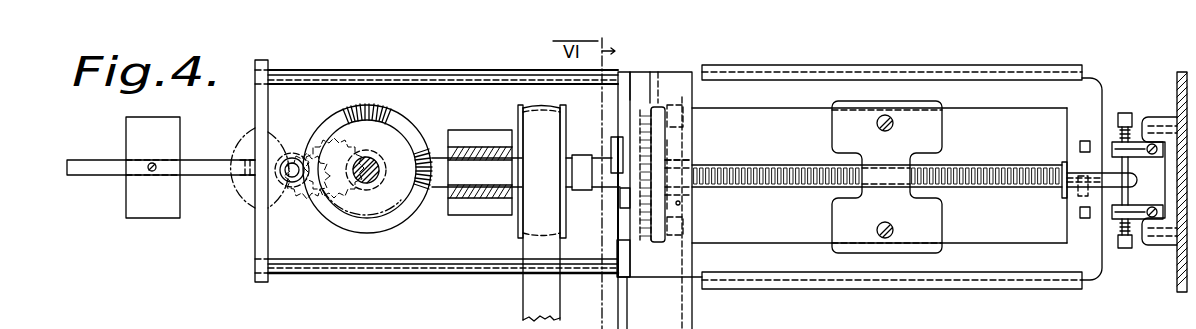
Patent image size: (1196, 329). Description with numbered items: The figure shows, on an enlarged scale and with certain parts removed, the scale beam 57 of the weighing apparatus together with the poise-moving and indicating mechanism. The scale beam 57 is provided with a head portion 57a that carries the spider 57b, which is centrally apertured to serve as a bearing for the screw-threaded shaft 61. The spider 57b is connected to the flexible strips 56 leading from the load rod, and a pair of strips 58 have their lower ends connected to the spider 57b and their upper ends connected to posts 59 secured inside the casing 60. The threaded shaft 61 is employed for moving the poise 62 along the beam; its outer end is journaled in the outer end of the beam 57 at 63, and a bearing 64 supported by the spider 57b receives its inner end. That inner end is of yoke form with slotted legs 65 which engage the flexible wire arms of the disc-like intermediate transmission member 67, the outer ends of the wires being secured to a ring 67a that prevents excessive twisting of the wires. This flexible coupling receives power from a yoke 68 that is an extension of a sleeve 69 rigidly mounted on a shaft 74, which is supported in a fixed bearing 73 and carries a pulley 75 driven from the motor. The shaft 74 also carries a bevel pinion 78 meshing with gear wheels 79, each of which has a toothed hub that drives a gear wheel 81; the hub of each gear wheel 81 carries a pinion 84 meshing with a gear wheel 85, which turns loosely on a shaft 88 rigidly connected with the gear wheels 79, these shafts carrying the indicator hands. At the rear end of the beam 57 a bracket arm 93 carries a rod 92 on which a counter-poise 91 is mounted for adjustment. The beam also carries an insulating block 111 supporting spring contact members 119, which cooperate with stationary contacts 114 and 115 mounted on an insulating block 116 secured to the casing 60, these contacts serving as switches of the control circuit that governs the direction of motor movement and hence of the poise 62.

The flexible strips 56 is at (619, 312).
The scale beam 57 is at (787, 92).
The head portion 57a is at (710, 52).
The spider 57b is at (672, 293).
The strips 58 is at (668, 119).
The posts 59 is at (684, 142).
The casing 60 is at (1177, 88).
The screw-threaded shaft 61 is at (820, 186).
The poise 62 is at (925, 132).
The journal 63 is at (1067, 150).
The bearing 64 is at (668, 204).
The yoke legs 65 is at (666, 160).
The intermediate transmission member 67 is at (637, 137).
The ring 67a is at (667, 228).
The yoke 68 is at (620, 200).
The sleeve 69 is at (604, 165).
The fixed bearing 73 is at (465, 145).
The shaft 74 is at (437, 158).
The pulley 75 is at (520, 117).
The bevel pinion 78 is at (426, 203).
The gear wheels 79 is at (396, 103).
The gear wheel 81 is at (250, 186).
The pinion 84 is at (304, 152).
The gear wheel 85 is at (313, 207).
The shaft 88 is at (368, 183).
The counter-poise 91 is at (135, 200).
The rod 92 is at (215, 155).
The bracket arm 93 is at (256, 98).
The insulating block 111 is at (1112, 175).
The stationary contact 114 is at (1143, 100).
The stationary contact 115 is at (1125, 241).
The insulating block 116 is at (1165, 238).
The spring contact members 119 is at (1112, 187).